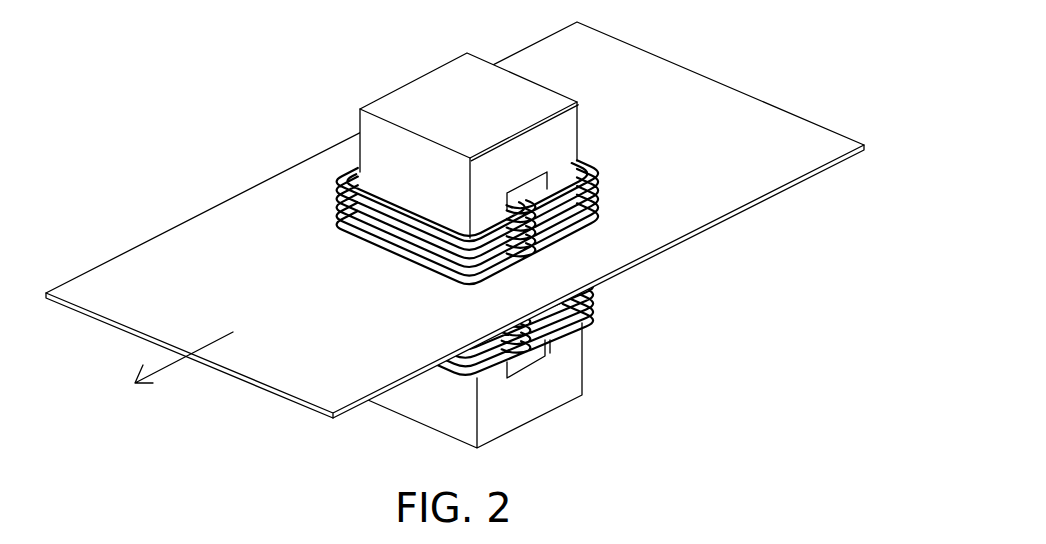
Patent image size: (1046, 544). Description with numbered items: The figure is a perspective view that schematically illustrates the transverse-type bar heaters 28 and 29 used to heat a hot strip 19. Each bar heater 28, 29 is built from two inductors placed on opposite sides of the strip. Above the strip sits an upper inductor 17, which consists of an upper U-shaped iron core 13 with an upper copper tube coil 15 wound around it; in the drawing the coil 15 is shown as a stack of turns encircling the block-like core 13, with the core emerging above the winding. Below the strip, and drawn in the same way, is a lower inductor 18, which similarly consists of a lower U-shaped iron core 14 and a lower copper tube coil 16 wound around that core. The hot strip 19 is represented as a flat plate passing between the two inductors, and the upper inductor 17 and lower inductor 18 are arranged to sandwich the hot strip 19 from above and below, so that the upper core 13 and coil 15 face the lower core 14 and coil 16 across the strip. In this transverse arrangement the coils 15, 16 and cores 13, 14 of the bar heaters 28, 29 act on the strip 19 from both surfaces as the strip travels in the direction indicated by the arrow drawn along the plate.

The upper U-shaped iron core 13 is at (548, 147).
The lower U-shaped iron core 14 is at (542, 385).
The upper copper tube coil 15 is at (607, 223).
The lower copper tube coil 16 is at (578, 313).
The upper inductor 17 is at (791, 230).
The lower inductor 18 is at (661, 328).
The hot strip 19 is at (677, 97).
The bar heater 28 is at (412, 68).
The bar heater 29 is at (455, 227).